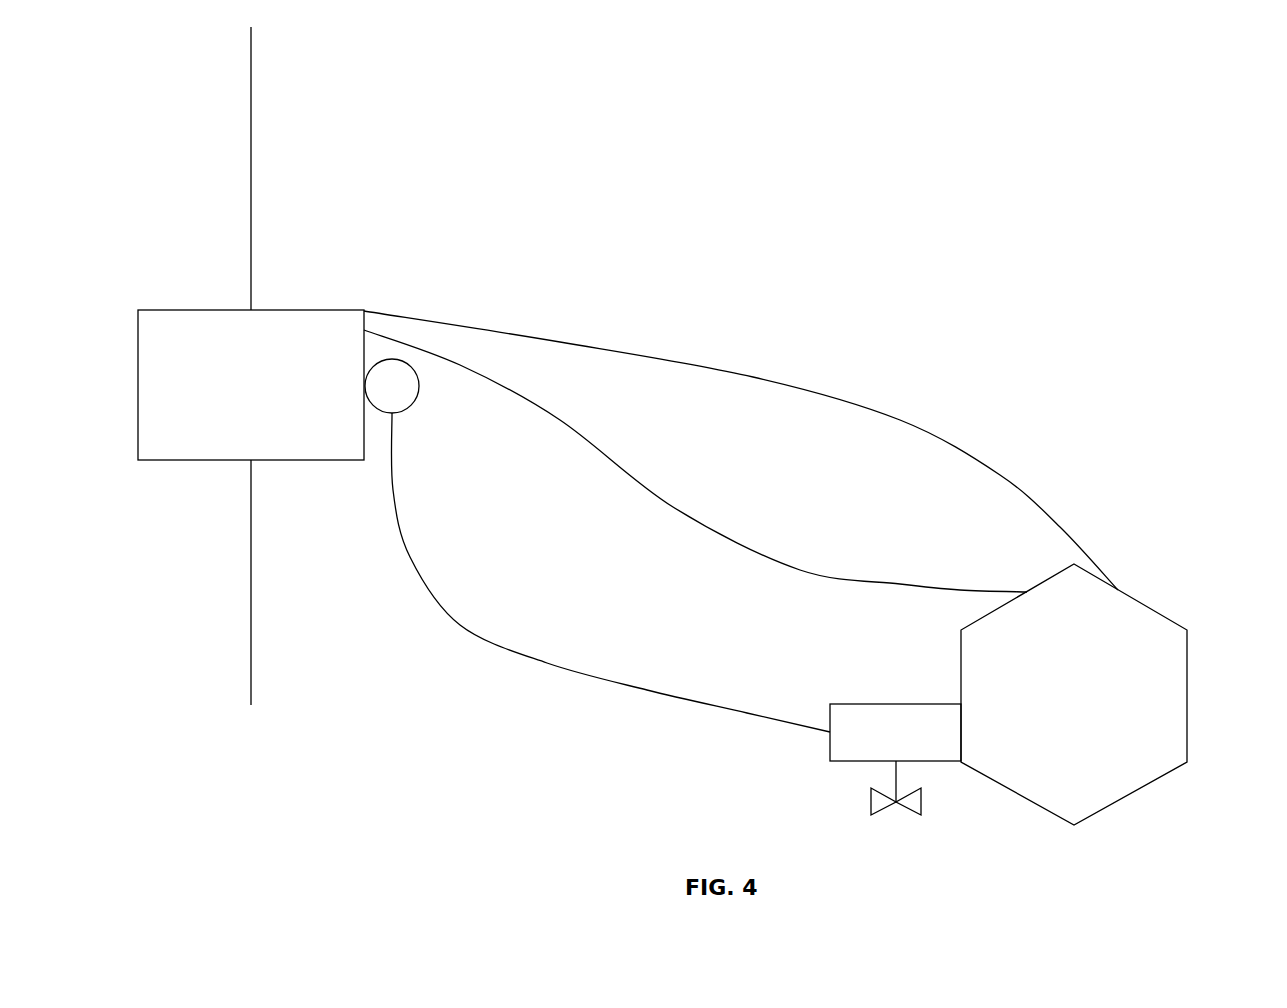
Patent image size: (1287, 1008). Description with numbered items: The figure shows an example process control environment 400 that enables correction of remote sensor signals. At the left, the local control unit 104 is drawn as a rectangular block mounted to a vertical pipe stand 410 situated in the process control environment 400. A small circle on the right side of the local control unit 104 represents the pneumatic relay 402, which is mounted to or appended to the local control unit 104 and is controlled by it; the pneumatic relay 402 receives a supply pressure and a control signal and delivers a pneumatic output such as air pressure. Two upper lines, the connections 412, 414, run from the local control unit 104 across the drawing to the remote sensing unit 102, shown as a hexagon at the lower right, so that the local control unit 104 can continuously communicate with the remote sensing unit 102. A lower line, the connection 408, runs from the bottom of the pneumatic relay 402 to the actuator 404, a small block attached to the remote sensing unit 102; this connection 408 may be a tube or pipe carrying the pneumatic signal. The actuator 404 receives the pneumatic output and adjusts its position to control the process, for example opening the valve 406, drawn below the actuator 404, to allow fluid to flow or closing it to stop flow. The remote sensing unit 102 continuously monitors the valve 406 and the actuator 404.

The process control environment 400 is at (703, 127).
The pipe stand 410 is at (251, 118).
The local control unit 104 is at (182, 310).
The pneumatic relay 402 is at (410, 408).
The connection 412 is at (750, 375).
The connection 414 is at (672, 505).
The connection 408 is at (460, 625).
The actuator 404 is at (902, 704).
The remote sensing unit 102 is at (1187, 682).
The valve 406 is at (910, 818).